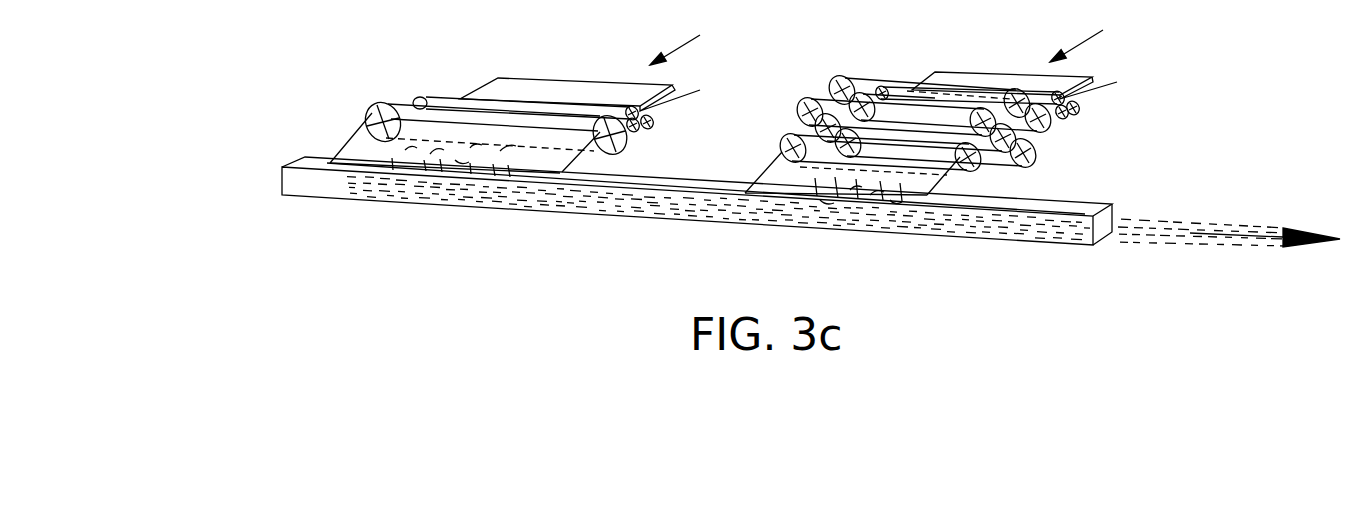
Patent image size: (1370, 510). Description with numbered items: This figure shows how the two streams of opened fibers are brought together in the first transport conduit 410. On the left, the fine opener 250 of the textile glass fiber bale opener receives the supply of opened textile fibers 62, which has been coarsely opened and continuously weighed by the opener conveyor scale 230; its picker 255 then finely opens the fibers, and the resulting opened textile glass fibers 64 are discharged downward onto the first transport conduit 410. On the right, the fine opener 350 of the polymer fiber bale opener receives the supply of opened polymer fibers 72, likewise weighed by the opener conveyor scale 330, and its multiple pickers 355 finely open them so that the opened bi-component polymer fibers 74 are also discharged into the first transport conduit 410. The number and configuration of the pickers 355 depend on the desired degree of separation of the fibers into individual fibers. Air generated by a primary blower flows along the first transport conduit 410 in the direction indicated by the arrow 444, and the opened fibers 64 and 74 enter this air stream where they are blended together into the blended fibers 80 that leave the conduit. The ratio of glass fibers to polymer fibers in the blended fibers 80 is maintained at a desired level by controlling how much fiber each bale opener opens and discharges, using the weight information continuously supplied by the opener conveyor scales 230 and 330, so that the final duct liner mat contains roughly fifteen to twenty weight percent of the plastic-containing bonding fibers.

The opened textile fibers 62 is at (541, 92).
The opened textile glass fibers 64 is at (517, 192).
The opened polymer fibers 72 is at (998, 77).
The opened bi-component polymer fibers 74 is at (818, 185).
The blended fibers 80 is at (1128, 234).
The opener conveyor scale 230 is at (683, 115).
The fine opener 250 is at (482, 98).
The picker 255 is at (377, 107).
The opener conveyor scale 330 is at (1097, 103).
The fine opener 350 is at (957, 104).
The pickers 355 is at (1062, 157).
The first transport conduit 410 is at (317, 192).
The arrow 444 is at (1308, 227).